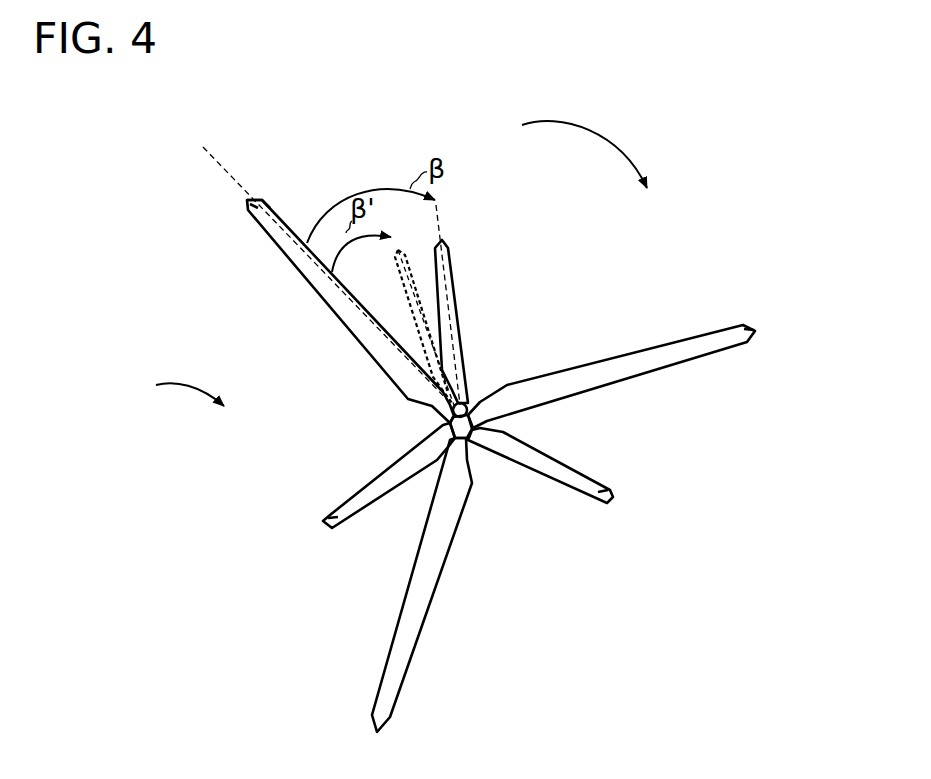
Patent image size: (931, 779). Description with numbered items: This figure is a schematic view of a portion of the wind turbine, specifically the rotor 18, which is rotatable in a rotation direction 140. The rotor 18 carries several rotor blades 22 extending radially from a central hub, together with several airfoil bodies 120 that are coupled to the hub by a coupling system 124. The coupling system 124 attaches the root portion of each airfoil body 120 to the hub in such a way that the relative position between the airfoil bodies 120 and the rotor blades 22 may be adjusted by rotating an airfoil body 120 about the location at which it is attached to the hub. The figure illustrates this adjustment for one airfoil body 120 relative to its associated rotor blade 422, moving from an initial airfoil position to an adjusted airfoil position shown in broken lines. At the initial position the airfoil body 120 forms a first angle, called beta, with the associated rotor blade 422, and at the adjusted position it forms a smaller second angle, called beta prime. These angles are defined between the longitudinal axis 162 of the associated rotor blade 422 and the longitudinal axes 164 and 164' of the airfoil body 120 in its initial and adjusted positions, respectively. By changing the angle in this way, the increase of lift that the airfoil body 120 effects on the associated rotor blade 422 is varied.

The rotor 18 is at (177, 389).
The rotor blades 22 is at (757, 331).
The airfoil body 120 is at (460, 337).
The coupling system 124 is at (468, 402).
The rotation direction 140 is at (602, 131).
The longitudinal axis of associated rotor blade 162 is at (203, 147).
The longitudinal axis of airfoil body 164 is at (471, 286).
The longitudinal axis of airfoil body at adjusted position 164' is at (418, 307).
The associated rotor blade 422 is at (240, 186).